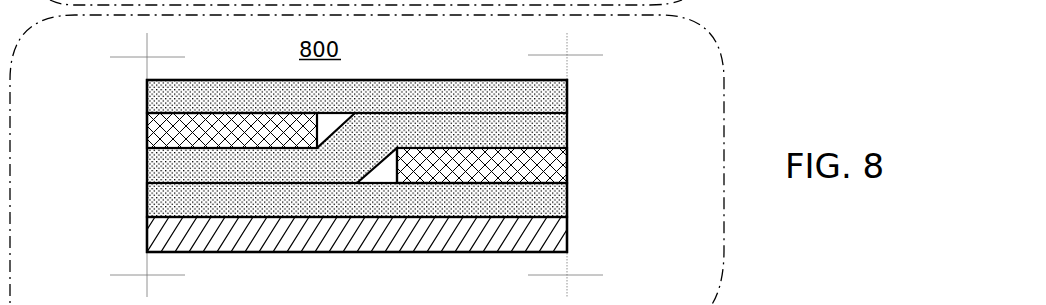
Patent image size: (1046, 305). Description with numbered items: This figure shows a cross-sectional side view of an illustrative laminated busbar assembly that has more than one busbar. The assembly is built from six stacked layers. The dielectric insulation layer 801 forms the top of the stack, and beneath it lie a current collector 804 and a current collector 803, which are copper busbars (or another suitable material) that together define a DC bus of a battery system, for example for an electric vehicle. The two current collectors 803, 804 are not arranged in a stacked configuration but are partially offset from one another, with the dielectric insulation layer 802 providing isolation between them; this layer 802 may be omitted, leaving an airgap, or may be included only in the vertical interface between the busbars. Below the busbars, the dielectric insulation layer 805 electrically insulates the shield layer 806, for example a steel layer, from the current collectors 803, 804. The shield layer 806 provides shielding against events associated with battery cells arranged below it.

The dielectric insulation layer 801 is at (567, 97).
The dielectric insulation layer 802 is at (567, 130).
The current collector 803 is at (567, 163).
The current collector 804 is at (147, 128).
The dielectric insulation layer 805 is at (567, 198).
The shield layer 806 is at (567, 233).